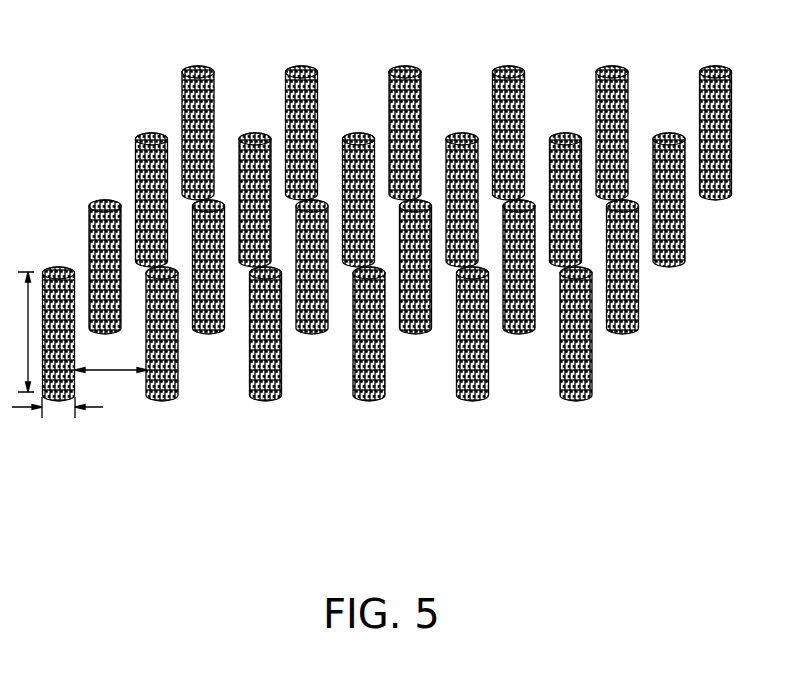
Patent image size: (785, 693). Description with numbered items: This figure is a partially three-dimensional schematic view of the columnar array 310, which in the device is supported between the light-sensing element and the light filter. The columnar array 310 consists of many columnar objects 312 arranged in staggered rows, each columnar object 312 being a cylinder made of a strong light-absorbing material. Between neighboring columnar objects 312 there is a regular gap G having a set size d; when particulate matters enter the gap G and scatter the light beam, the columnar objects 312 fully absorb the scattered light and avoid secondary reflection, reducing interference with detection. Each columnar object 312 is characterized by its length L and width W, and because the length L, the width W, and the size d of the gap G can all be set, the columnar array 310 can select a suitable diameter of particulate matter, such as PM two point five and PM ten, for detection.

The columnar array 310 is at (380, 239).
The columnar objects 312 is at (508, 82).
The gap G is at (313, 383).
The length L is at (22, 332).
The width W is at (57, 420).
The size of the gap d is at (111, 357).